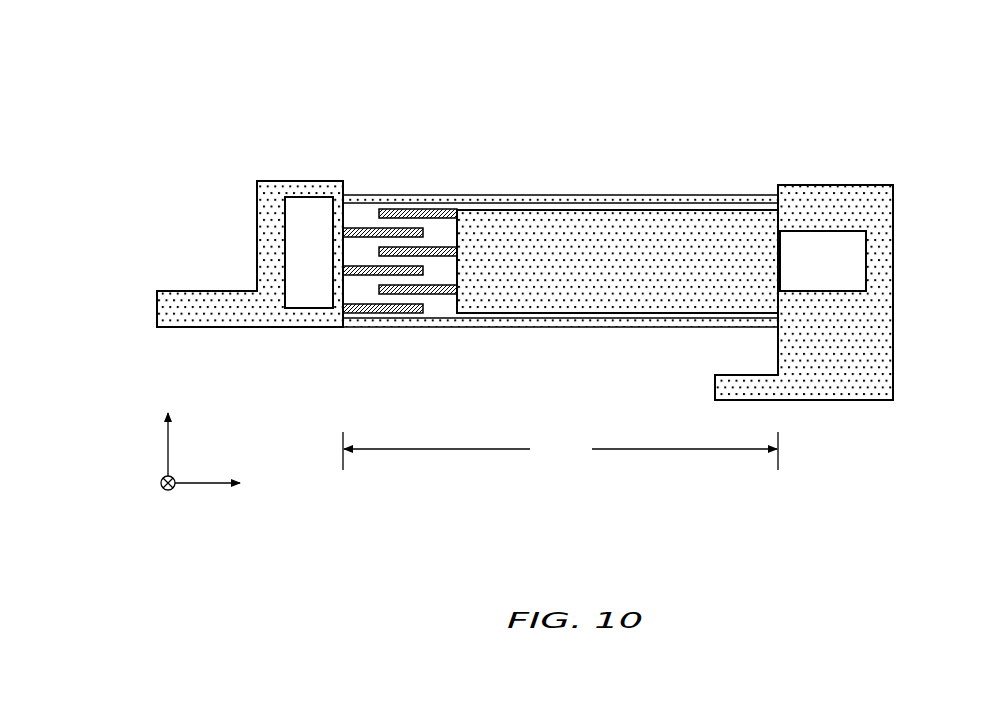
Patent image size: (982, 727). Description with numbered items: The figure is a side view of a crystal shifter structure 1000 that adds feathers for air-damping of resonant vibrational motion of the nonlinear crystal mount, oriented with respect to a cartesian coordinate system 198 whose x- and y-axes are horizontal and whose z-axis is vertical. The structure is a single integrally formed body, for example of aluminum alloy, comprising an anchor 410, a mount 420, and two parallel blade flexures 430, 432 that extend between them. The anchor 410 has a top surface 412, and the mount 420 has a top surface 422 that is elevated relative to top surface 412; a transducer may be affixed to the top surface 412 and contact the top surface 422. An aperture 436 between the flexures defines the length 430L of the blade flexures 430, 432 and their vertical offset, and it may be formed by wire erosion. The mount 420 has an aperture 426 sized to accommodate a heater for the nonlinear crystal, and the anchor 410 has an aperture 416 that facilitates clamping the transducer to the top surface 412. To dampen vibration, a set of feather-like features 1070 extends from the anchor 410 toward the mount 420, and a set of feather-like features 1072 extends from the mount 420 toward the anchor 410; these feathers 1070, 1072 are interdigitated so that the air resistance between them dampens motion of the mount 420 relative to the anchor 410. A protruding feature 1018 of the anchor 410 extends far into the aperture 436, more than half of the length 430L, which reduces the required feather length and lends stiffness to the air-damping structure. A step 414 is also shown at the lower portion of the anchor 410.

The crystal shifter structure 1000 is at (218, 84).
The mount 420 is at (287, 180).
The top surface of mount 422 is at (326, 175).
The aperture of mount 426 is at (293, 302).
The feather-like features 1070 is at (441, 285).
The feather-like features 1072 is at (365, 238).
The blade flexure 432 is at (628, 195).
The blade flexure 430 is at (632, 327).
The protruding feature 1018 is at (643, 237).
The aperture 436 is at (447, 308).
The anchor 410 is at (872, 183).
The top surface of anchor 412 is at (822, 177).
The aperture of anchor 416 is at (852, 269).
The bottom step of second connector block 414 is at (713, 385).
The length of blade flexures 430L is at (560, 451).
The cartesian coordinate system 198 is at (150, 427).